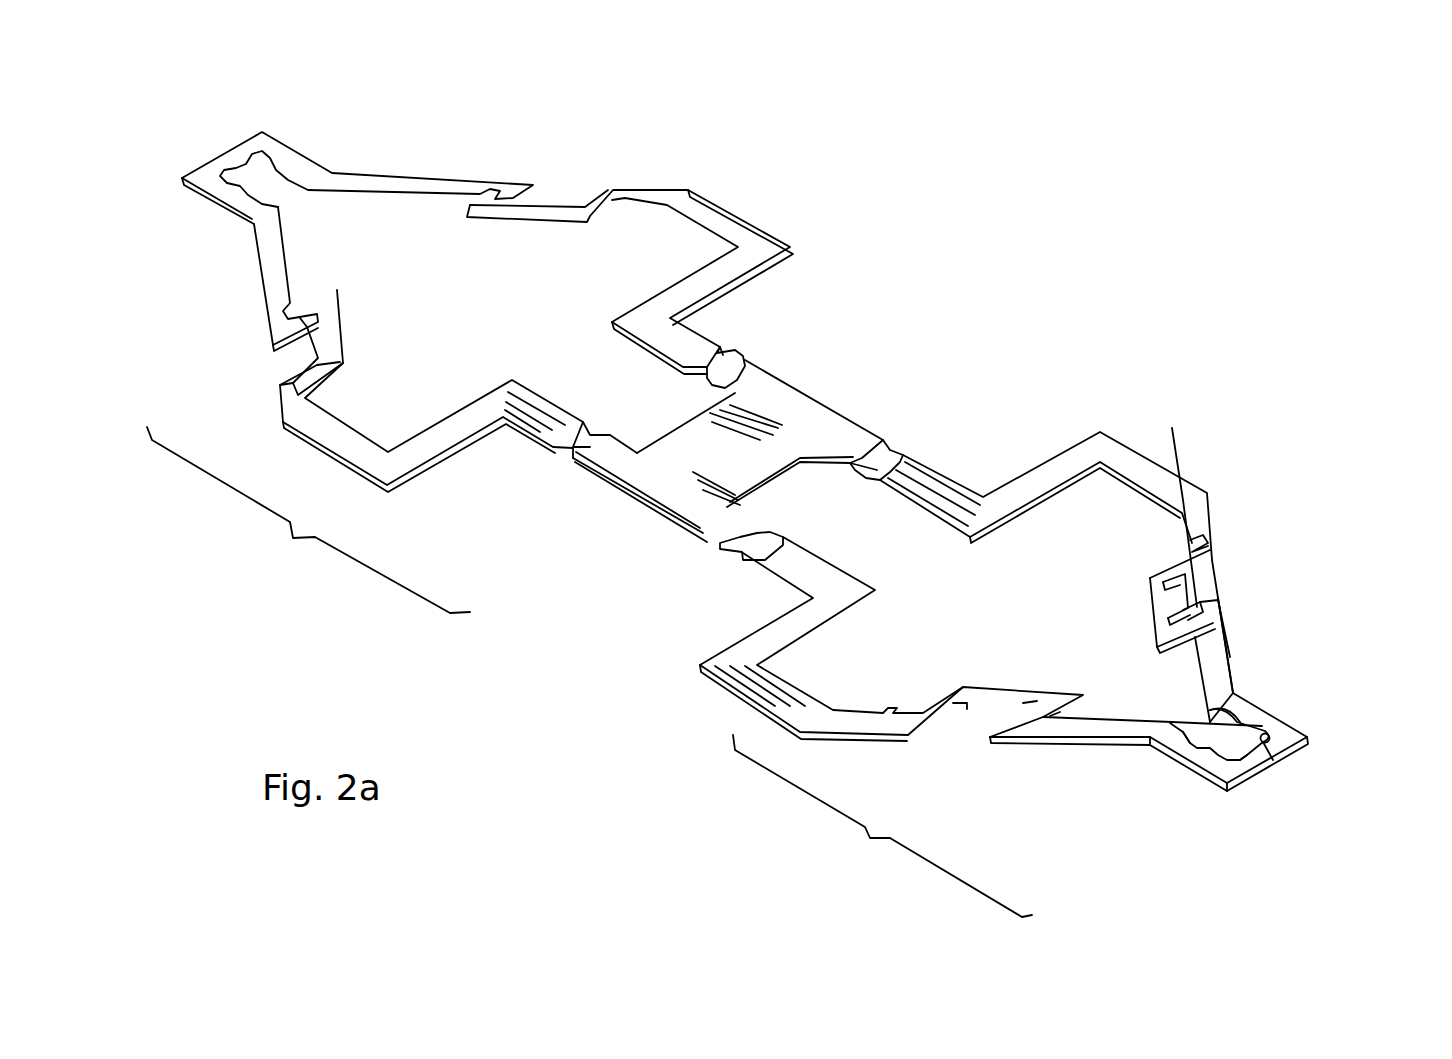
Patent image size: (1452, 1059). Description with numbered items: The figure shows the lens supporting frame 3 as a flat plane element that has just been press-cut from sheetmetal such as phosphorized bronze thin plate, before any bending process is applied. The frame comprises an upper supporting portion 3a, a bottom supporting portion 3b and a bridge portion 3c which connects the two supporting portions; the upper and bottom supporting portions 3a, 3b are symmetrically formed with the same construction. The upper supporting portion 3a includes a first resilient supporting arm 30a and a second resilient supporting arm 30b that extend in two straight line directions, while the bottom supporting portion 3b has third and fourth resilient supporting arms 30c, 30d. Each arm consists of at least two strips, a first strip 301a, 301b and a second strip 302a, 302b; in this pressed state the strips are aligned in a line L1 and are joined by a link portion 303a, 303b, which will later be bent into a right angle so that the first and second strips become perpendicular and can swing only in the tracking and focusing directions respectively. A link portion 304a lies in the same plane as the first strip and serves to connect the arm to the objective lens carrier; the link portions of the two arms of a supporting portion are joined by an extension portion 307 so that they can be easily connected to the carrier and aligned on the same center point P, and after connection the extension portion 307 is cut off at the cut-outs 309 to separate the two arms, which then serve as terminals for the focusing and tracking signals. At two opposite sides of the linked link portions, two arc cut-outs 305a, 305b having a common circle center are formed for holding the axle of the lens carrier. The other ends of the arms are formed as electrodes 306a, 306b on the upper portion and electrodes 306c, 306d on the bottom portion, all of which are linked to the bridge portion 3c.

The lens supporting frame 3 is at (900, 268).
The upper supporting portion 3a is at (882, 826).
The bottom supporting portion 3b is at (308, 520).
The bridge portion 3c is at (808, 426).
The first resilient supporting arm 30a is at (1166, 640).
The second resilient supporting arm 30b is at (936, 678).
The third resilient supporting arm 30c is at (640, 186).
The fourth resilient supporting arm 30d is at (306, 440).
The first strip 301a is at (1225, 670).
The first strip 301b is at (1132, 748).
The second strip 302a is at (1158, 607).
The second strip 302b is at (1018, 695).
The link portion 303a is at (1198, 605).
The link portion 303b is at (1216, 528).
The link portion 304a is at (1272, 733).
The arc cut-out 305a is at (1240, 703).
The arc cut-out 305b is at (1187, 750).
The electrode 306a is at (890, 470).
The electrode 306b is at (702, 533).
The electrode 306c is at (740, 360).
The electrode 306d is at (575, 452).
The extension portion 307 is at (1273, 760).
The cut-outs 309 is at (1265, 785).
The center point P is at (1200, 722).
The line L1 is at (1189, 508).